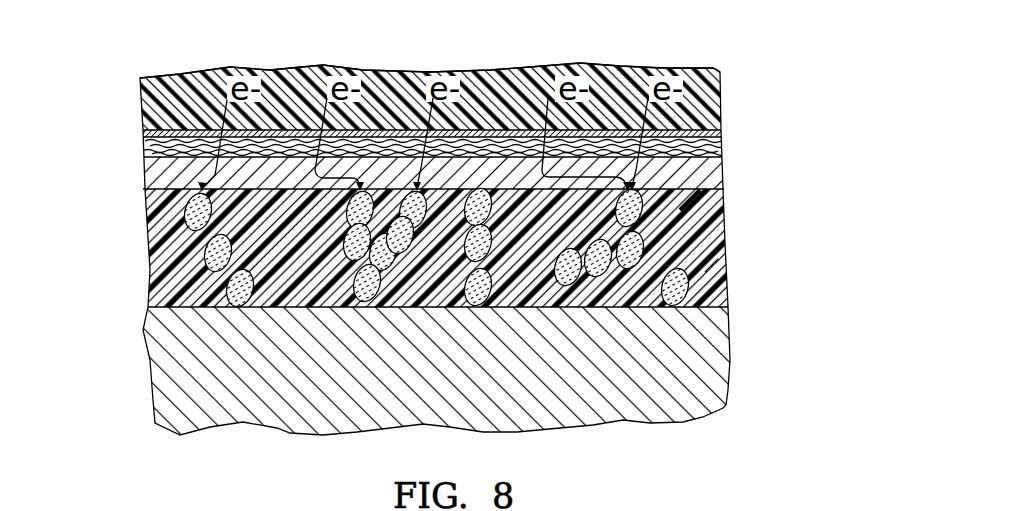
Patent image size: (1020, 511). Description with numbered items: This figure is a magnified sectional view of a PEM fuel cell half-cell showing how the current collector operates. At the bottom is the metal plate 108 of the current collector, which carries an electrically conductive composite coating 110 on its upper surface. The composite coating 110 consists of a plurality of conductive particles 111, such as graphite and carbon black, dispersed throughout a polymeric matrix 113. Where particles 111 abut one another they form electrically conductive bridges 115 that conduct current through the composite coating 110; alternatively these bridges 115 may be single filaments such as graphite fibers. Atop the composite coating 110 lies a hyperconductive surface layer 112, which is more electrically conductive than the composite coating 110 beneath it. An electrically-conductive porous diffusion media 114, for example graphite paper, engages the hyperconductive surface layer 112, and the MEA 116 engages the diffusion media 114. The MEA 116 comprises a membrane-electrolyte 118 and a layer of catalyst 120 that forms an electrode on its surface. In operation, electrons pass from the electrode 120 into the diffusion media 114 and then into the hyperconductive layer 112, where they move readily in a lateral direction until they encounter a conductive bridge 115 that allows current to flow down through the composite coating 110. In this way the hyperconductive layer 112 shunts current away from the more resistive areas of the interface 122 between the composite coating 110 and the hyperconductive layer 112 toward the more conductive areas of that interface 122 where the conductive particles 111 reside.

The metal plate 108 is at (713, 346).
The electrically conductive composite coating 110 is at (738, 243).
The conductive particles 111 is at (688, 203).
The hyperconductive surface layer 112 is at (708, 170).
The polymeric matrix 113 is at (711, 265).
The electrically-conductive porous diffusion media 114 is at (145, 145).
The electrically conductive bridges 115 is at (341, 273).
The MEA 116 is at (114, 102).
The membrane-electrolyte 118 is at (152, 86).
The layer of catalyst 120 is at (695, 112).
The interface 122 is at (137, 190).